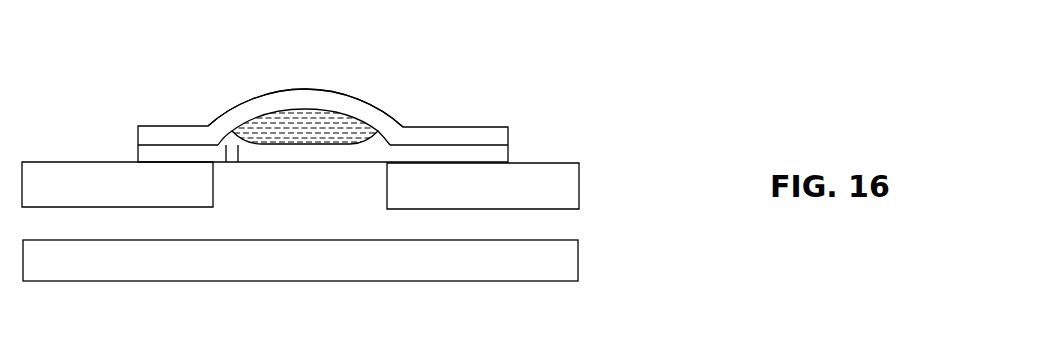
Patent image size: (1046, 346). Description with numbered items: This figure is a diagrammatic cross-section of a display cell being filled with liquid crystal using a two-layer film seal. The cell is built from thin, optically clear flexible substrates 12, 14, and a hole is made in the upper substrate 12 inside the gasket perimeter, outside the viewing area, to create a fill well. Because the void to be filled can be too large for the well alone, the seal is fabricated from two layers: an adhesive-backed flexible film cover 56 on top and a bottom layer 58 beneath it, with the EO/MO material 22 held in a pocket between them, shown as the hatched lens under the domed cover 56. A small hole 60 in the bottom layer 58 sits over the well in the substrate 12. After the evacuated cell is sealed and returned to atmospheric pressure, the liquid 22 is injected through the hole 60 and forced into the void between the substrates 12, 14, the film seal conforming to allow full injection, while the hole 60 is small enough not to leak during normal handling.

The flexible substrate 12 is at (502, 198).
The flexible substrate 14 is at (502, 273).
The EO/MO material 22 is at (332, 120).
The adhesive-backed flexible film cover 56 is at (283, 102).
The bottom layer 58 is at (472, 153).
The hole 60 is at (231, 158).